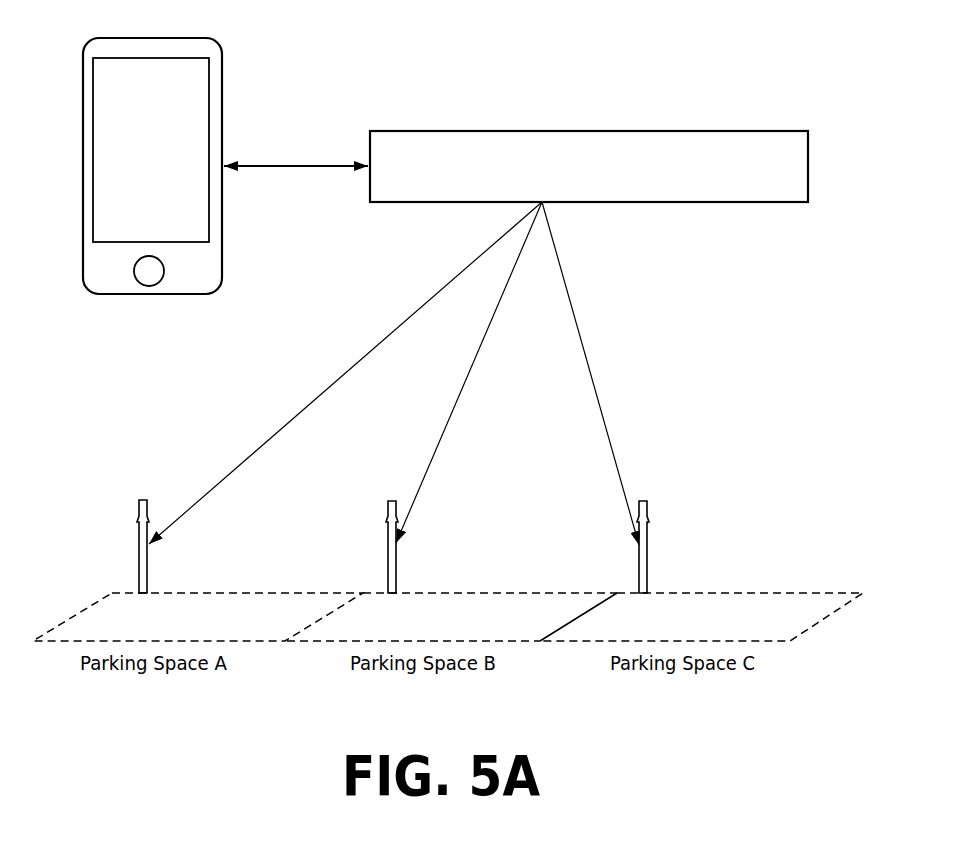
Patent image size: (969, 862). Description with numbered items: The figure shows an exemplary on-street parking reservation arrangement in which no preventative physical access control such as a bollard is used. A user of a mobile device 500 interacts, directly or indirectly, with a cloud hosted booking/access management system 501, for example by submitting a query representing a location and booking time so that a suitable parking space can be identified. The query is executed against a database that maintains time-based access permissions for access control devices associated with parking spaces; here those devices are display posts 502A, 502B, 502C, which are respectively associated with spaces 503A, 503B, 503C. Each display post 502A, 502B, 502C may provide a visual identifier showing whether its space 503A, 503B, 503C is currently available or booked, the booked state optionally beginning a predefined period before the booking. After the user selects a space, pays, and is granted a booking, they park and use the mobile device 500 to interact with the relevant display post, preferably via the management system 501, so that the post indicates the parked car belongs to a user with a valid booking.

The mobile device 500 is at (153, 38).
The cloud hosted booking/access management system 501 is at (587, 131).
The display post 502A is at (138, 520).
The display post 502B is at (387, 520).
The display post 502C is at (649, 524).
The parking space 503A is at (257, 593).
The parking space 503B is at (498, 593).
The parking space 503C is at (757, 593).